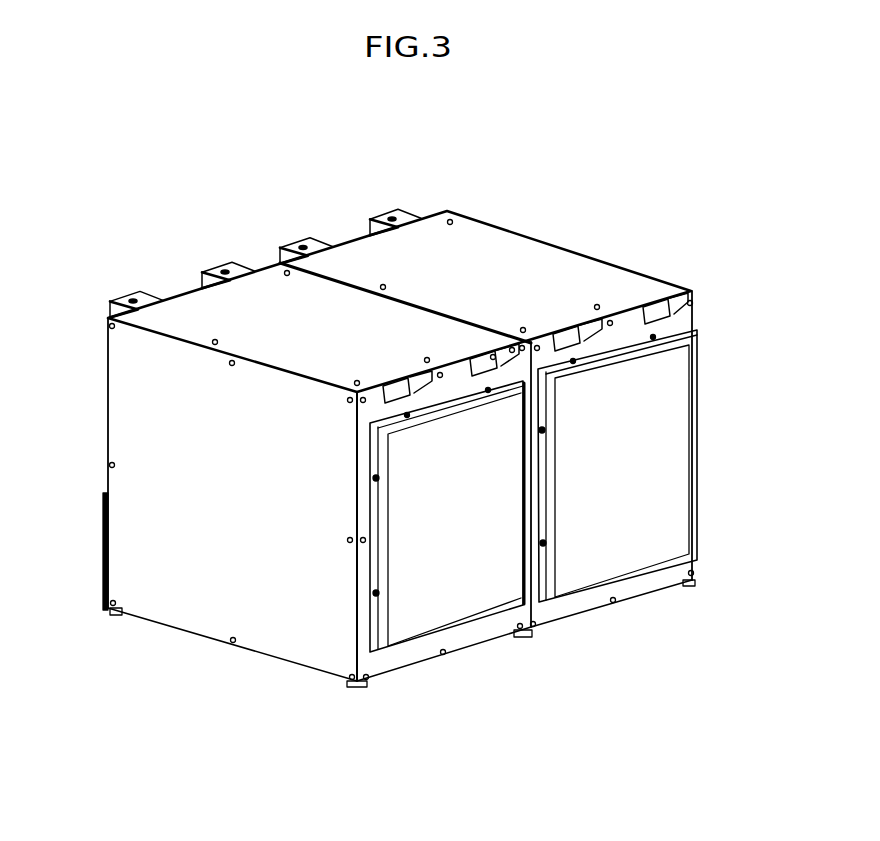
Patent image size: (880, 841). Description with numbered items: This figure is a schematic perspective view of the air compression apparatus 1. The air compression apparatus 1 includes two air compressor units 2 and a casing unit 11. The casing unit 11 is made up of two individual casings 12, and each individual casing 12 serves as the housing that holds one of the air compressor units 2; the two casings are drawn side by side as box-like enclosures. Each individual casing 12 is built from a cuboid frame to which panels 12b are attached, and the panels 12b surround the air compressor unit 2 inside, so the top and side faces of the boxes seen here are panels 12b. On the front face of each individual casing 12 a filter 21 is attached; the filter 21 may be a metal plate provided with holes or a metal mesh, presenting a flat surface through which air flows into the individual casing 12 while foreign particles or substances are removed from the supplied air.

The air compression apparatus 1 is at (543, 192).
The casing unit 11 is at (278, 264).
The individual casing 12 is at (107, 340).
The panel 12b is at (402, 257).
The air compressor unit 2 is at (467, 557).
The filter 21 is at (662, 467).